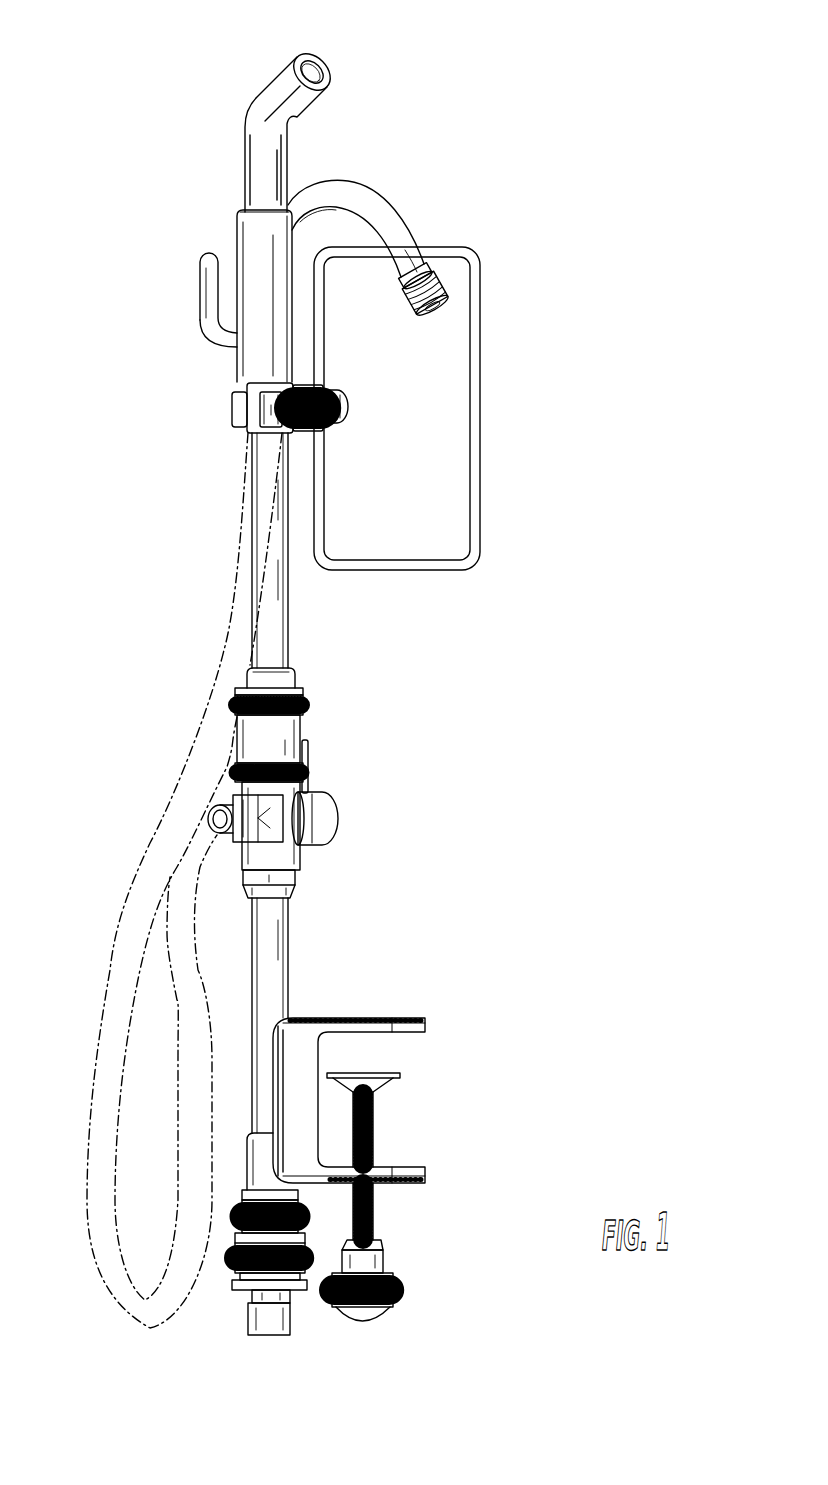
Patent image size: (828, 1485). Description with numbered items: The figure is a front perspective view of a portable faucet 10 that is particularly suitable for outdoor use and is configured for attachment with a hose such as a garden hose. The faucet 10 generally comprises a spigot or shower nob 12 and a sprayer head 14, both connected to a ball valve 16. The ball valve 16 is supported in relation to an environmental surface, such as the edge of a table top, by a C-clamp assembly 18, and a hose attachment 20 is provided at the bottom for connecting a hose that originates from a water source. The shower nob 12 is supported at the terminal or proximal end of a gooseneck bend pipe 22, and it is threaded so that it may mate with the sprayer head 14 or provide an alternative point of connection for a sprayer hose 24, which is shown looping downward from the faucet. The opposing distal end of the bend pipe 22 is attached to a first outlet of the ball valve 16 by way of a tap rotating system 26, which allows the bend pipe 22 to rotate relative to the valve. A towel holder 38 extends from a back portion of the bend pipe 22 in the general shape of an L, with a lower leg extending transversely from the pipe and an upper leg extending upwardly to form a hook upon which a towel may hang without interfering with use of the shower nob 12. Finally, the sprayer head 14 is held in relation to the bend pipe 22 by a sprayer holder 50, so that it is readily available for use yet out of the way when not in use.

The portable faucet 10 is at (460, 56).
The shower nob 12 is at (452, 302).
The sprayer head 14 is at (246, 104).
The ball valve 16 is at (338, 821).
The C-clamp assembly 18 is at (482, 1006).
The hose attachment 20 is at (281, 1339).
The gooseneck bend pipe 22 is at (381, 180).
The sprayer hose 24 is at (175, 840).
The tap rotating system 26 is at (513, 668).
The towel holder 38 is at (205, 284).
The sprayer holder 50 is at (233, 409).